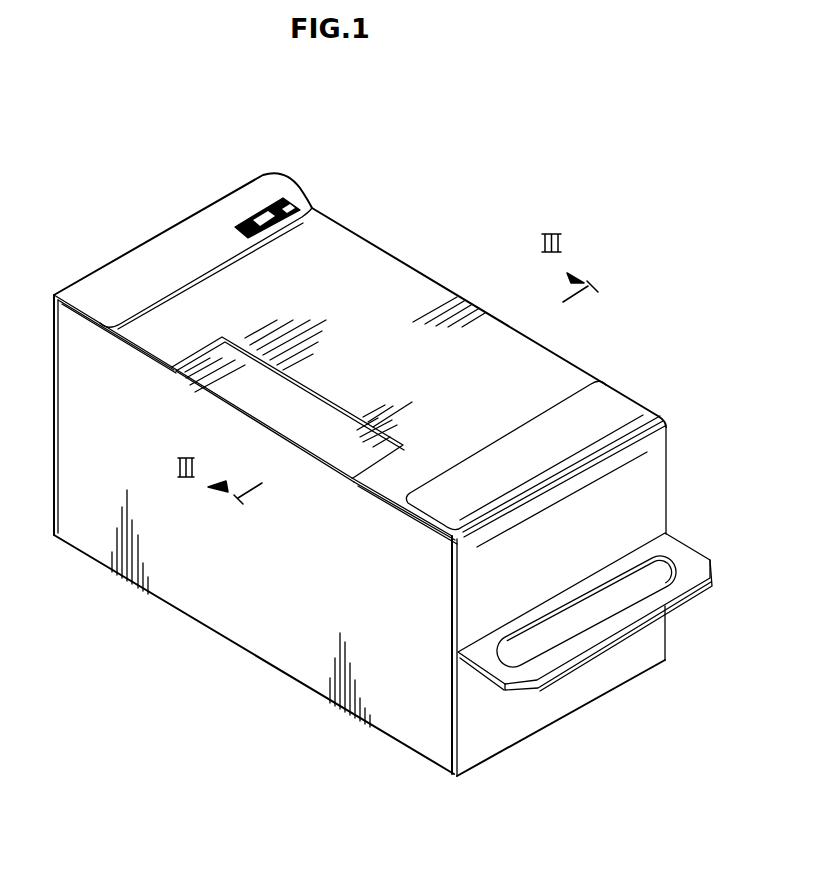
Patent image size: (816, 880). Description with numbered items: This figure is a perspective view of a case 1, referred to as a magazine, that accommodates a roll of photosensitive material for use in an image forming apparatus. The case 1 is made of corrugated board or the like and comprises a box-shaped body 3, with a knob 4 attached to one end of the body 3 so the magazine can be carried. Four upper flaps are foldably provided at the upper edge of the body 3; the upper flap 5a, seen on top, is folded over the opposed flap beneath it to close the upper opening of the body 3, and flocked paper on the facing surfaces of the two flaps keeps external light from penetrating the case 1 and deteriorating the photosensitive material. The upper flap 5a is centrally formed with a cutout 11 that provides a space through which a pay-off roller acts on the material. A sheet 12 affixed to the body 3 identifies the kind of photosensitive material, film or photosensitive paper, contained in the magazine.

The case 1 is at (495, 189).
The box-shaped body 3 is at (188, 593).
The knob 4 is at (571, 668).
The upper flap 5a is at (423, 300).
The cutout 11 is at (307, 408).
The sheet 12 is at (266, 203).